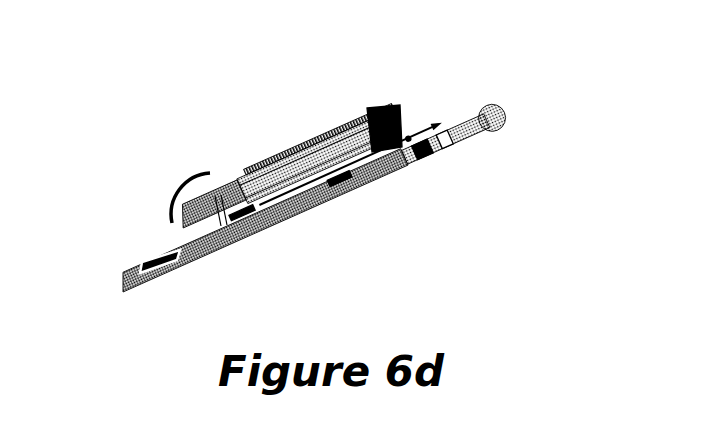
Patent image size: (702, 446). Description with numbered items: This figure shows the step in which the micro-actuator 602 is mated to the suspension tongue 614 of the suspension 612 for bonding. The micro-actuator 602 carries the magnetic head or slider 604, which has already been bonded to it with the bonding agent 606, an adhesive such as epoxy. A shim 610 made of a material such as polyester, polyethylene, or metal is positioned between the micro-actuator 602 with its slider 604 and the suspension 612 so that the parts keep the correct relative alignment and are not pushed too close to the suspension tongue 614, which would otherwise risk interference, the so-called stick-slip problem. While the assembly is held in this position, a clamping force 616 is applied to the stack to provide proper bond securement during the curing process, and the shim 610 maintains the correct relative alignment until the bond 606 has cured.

The micro-actuator 602 is at (177, 193).
The magnetic head (slider) 604 is at (300, 143).
The bonding agent 606 is at (242, 217).
The shim 610 is at (318, 185).
The suspension 612 is at (397, 170).
The suspension tongue 614 is at (227, 228).
The clamping force 616 is at (333, 122).